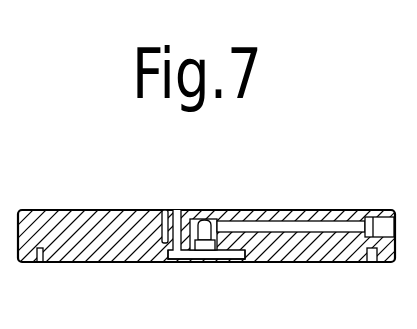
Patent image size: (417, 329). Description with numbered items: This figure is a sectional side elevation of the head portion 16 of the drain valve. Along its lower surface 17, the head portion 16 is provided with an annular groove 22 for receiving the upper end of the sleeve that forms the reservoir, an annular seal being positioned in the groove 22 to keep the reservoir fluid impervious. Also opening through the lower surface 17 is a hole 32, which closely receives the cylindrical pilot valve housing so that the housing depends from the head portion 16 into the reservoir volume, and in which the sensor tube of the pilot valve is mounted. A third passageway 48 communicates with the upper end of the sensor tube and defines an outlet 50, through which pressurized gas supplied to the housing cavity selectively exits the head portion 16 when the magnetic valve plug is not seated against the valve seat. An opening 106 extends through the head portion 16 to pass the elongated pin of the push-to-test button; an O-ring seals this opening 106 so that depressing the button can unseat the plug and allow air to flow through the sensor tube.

The head portion 16 is at (62, 214).
The lower surface 17 is at (82, 263).
The annular groove 22 is at (45, 263).
The hole 32 is at (173, 257).
The third passageway 48 is at (300, 225).
The outlet 50 is at (377, 220).
The opening 106 is at (183, 227).